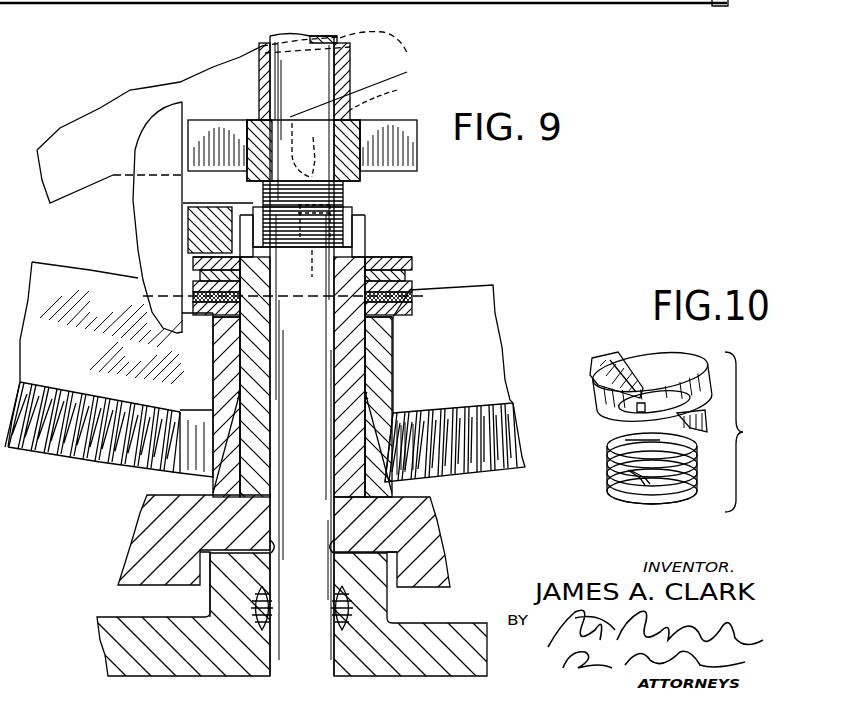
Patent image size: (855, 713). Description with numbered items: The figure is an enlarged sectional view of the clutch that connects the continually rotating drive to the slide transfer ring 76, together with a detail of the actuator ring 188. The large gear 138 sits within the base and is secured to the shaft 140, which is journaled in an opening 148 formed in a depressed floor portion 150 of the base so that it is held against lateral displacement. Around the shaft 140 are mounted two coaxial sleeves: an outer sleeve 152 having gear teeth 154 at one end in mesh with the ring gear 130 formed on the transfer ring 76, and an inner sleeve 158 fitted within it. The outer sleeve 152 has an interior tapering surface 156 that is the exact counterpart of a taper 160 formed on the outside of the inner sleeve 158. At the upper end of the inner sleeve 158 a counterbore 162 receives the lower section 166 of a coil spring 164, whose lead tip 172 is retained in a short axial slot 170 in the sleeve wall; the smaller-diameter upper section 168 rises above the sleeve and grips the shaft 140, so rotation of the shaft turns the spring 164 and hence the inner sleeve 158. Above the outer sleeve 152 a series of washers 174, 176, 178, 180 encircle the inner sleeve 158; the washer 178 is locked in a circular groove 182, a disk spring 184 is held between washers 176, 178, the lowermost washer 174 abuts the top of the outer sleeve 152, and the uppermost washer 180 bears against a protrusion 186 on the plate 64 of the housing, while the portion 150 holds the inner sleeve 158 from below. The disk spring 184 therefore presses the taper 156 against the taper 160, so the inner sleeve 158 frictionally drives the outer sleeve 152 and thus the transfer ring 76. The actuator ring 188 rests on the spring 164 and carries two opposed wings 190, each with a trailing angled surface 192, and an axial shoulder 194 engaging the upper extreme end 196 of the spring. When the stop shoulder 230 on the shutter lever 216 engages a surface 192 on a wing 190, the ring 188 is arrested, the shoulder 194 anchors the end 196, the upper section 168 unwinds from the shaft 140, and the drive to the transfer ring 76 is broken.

In FIG. 9, the plate 64 is at (150, 222).
In FIG. 9, the transfer ring 76 is at (487, 335).
In FIG. 9, the ring gear 130 is at (48, 393).
In FIG. 9, the gear 138 is at (110, 627).
In FIG. 9, the shaft 140 is at (302, 440).
In FIG. 9, the opening 148 is at (267, 562).
In FIG. 9, the depressed floor portion 150 is at (427, 533).
In FIG. 9, the outer sleeve 152 is at (380, 348).
In FIG. 9, the gear teeth 154 is at (415, 410).
In FIG. 9, the tapering surface 156 is at (375, 397).
In FIG. 9, the inner sleeve 158 is at (397, 332).
In FIG. 9, the taper 160 is at (387, 372).
In FIG. 9, the counterbore 162 is at (352, 210).
In FIG. 9, the coil spring 164 is at (352, 232).
In FIG. 10, the coil spring 164 is at (613, 465).
In FIG. 9, the lower section 166 is at (363, 248).
In FIG. 9, the upper section 168 is at (343, 193).
In FIG. 9, the slot 170 is at (267, 197).
In FIG. 9, the lead tip 172 is at (310, 248).
In FIG. 10, the lead tip 172 is at (648, 483).
In FIG. 9, the washer 174 is at (412, 310).
In FIG. 9, the washer 176 is at (412, 283).
In FIG. 9, the washer 178 is at (412, 270).
In FIG. 9, the washer 180 is at (412, 257).
In FIG. 9, the circular groove 182 is at (193, 270).
In FIG. 9, the disk spring 184 is at (412, 297).
In FIG. 9, the protrusion 186 is at (200, 213).
In FIG. 9, the actuator ring 188 is at (365, 120).
In FIG. 10, the actuator ring 188 is at (677, 370).
In FIG. 9, the wing 190 is at (200, 118).
In FIG. 10, the wing 190 is at (598, 347).
In FIG. 9, the angled surface 192 is at (210, 133).
In FIG. 10, the angled surface 192 is at (617, 357).
In FIG. 9, the shoulder 194 is at (315, 201).
In FIG. 10, the shoulder 194 is at (642, 410).
In FIG. 9, the upper extreme end 196 is at (352, 95).
In FIG. 10, the upper extreme end 196 is at (625, 441).
In FIG. 9, the shutter lever 216 is at (397, 53).
In FIG. 9, the stop shoulder 230 is at (370, 88).